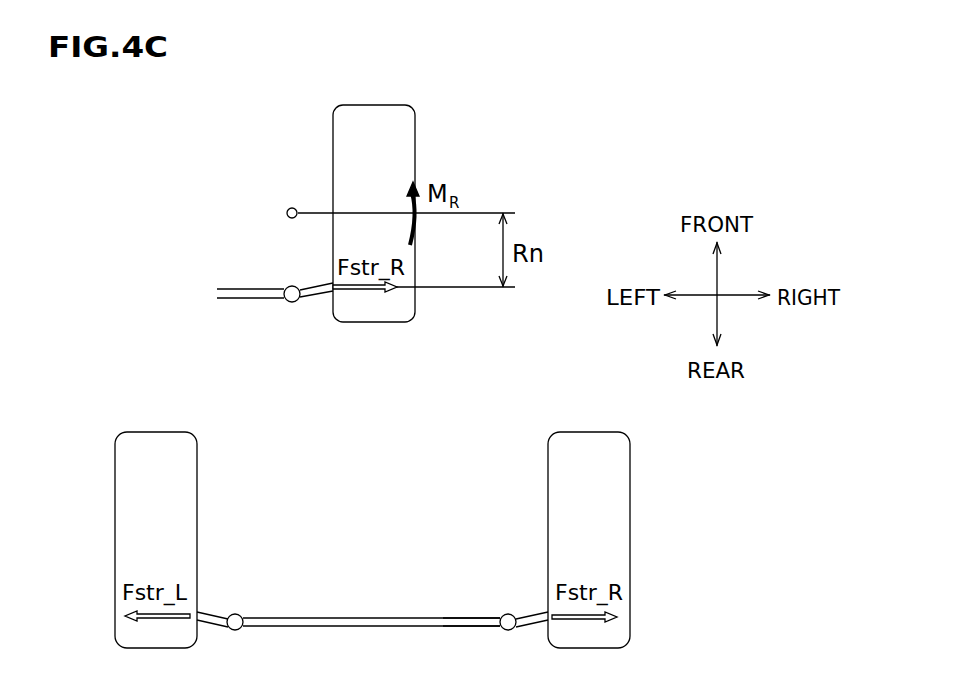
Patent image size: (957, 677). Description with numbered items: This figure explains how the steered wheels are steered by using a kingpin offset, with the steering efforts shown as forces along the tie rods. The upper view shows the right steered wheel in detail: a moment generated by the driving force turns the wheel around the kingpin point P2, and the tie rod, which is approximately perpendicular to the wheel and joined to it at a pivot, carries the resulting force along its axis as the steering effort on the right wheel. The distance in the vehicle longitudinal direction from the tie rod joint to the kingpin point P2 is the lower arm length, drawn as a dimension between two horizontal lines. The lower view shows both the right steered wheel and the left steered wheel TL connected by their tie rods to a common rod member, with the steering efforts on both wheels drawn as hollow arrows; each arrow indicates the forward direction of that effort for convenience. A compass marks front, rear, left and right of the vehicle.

The kingpin point P2 is at (288, 207).
The left steered wheel TL is at (154, 440).